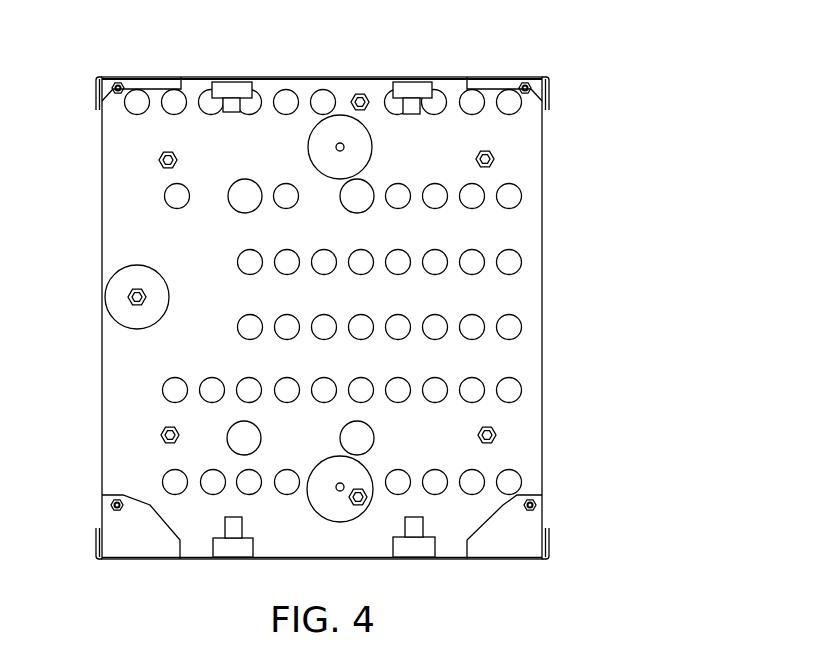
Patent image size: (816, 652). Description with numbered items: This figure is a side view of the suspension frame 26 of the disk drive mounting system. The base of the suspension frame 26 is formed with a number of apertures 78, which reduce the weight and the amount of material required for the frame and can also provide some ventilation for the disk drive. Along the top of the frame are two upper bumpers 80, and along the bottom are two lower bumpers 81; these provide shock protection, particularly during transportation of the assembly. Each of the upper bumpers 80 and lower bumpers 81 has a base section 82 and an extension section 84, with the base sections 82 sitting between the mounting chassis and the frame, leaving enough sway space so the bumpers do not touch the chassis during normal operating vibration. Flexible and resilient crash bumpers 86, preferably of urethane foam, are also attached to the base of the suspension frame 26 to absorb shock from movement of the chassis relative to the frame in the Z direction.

The suspension frame 26 is at (572, 74).
The apertures 78 is at (508, 190).
The upper bumpers 80 is at (208, 87).
The lower bumpers 81 is at (208, 550).
The base section 82 is at (233, 82).
The extension section 84 is at (232, 113).
The crash bumpers 86 is at (334, 178).